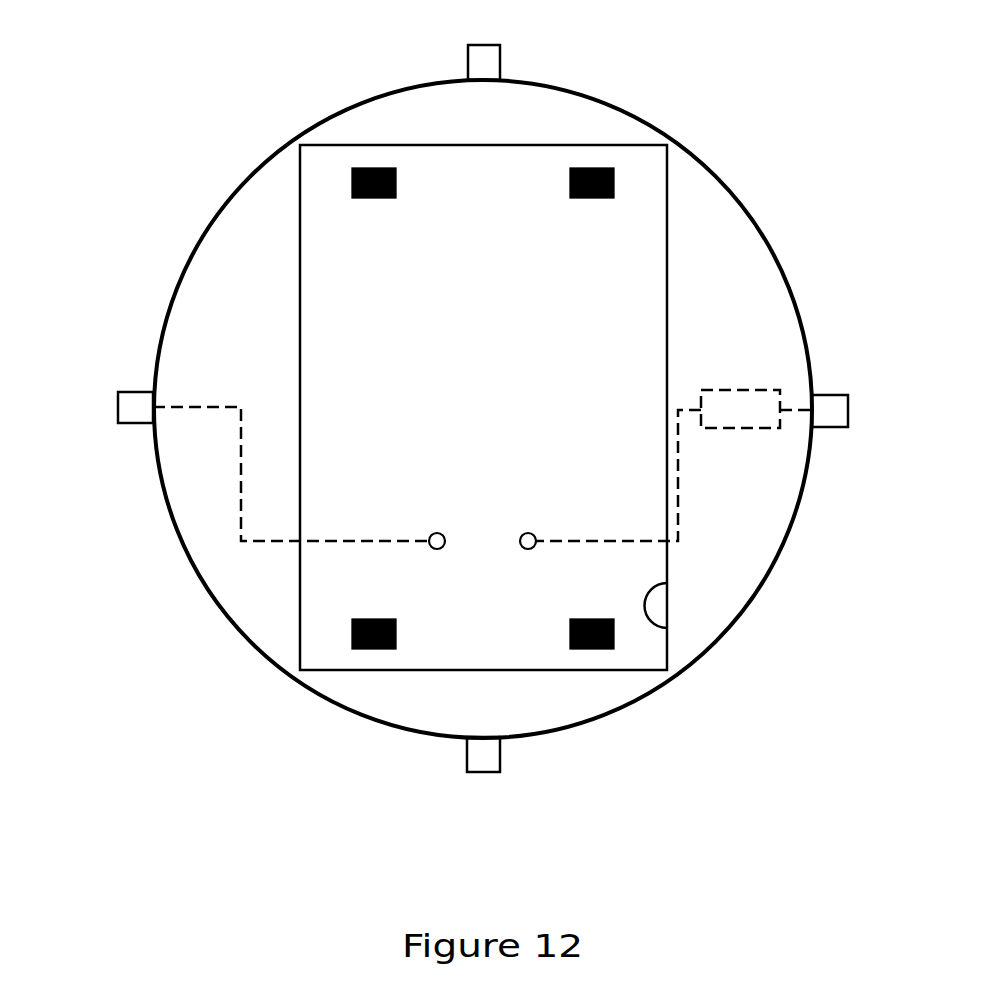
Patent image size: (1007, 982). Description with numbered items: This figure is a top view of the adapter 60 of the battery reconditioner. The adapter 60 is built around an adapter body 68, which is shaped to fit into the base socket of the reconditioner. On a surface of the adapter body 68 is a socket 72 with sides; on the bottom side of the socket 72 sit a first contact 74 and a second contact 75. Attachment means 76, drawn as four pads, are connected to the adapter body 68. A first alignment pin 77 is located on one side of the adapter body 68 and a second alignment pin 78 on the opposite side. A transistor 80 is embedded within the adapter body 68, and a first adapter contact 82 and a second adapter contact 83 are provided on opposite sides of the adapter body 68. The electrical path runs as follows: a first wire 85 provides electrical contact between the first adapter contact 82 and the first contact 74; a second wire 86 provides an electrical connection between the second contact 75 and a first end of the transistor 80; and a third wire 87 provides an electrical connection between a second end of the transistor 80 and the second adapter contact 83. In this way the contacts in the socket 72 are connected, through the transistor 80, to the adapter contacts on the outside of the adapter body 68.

The adapter 60 is at (720, 686).
The adapter body 68 is at (248, 595).
The socket 72 is at (668, 628).
The first contact 74 is at (437, 549).
The second contact 75 is at (528, 549).
The attachment means 76 is at (357, 170).
The first alignment pin 77 is at (480, 772).
The second alignment pin 78 is at (468, 55).
The transistor 80 is at (752, 428).
The first adapter contact 82 is at (131, 392).
The second adapter contact 83 is at (848, 405).
The first wire 85 is at (241, 480).
The second wire 86 is at (678, 482).
The third wire 87 is at (787, 408).